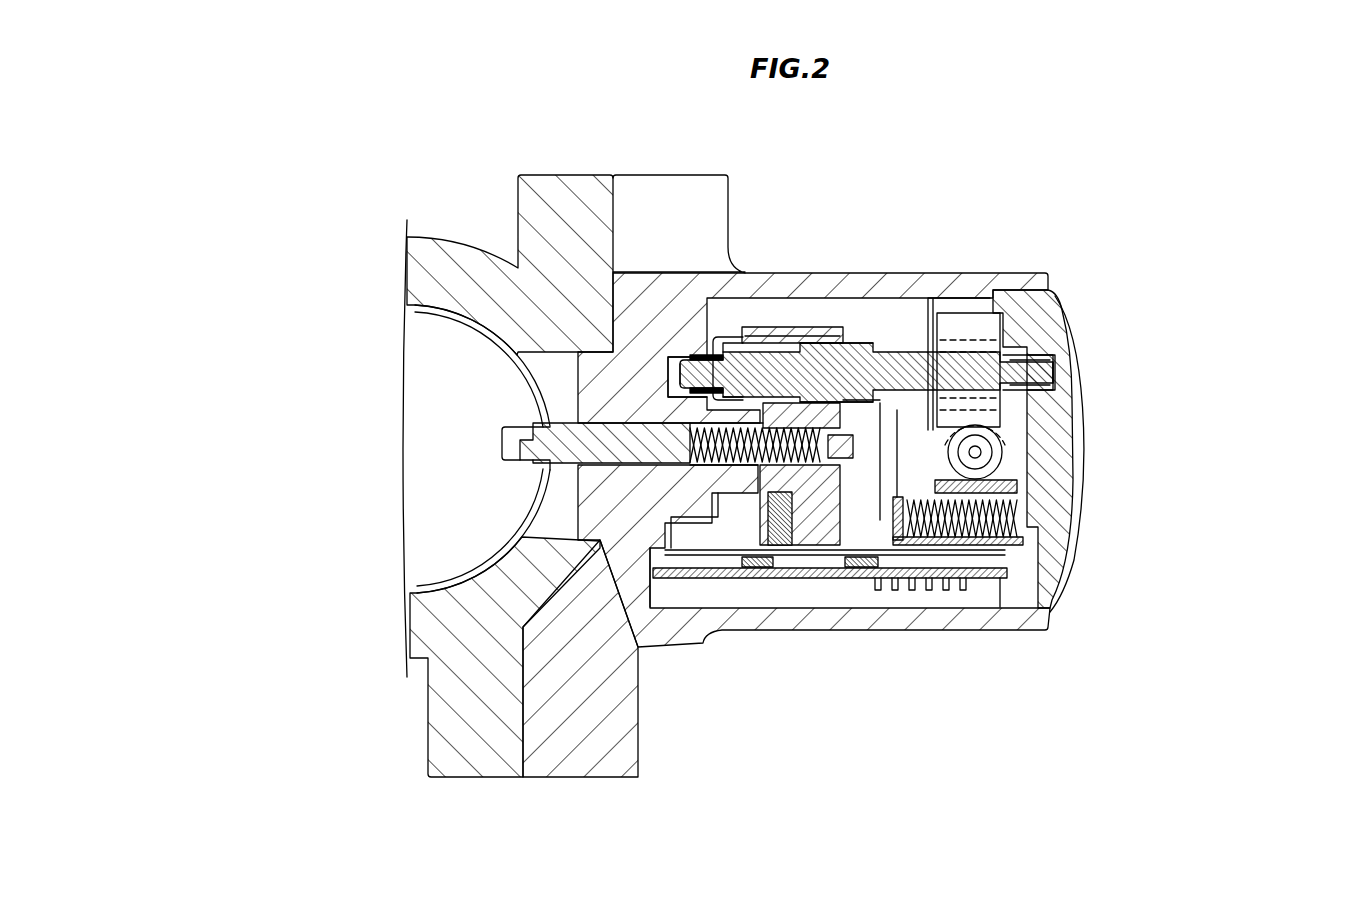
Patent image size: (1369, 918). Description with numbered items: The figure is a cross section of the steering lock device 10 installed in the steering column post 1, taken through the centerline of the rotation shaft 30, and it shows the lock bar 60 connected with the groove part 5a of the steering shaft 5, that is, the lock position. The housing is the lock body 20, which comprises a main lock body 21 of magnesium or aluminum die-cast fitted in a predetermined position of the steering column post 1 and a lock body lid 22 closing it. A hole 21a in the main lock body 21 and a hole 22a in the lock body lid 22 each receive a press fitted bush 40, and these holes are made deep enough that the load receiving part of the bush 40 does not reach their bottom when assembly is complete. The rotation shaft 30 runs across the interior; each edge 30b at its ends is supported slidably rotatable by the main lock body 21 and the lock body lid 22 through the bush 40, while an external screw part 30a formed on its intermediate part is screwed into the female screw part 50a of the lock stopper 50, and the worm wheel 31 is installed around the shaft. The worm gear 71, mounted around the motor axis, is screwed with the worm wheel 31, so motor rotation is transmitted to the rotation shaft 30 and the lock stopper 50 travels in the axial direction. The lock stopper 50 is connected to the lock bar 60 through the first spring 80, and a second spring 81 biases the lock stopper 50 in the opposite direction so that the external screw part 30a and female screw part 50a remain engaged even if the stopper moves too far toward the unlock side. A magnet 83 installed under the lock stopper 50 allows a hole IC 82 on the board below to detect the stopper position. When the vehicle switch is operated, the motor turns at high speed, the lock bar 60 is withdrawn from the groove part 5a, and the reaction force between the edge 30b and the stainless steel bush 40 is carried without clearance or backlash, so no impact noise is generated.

The steering column post 1 is at (540, 192).
The steering shaft 5 is at (366, 449).
The groove part 5a is at (512, 448).
The steering lock device 10 is at (1060, 182).
The lock body 20 is at (947, 273).
The main lock body 21 is at (726, 502).
The hole 21a is at (672, 378).
The lock body lid 22 is at (1149, 447).
The hole 22a is at (1047, 372).
The rotation shaft 30 is at (923, 274).
The external screw part 30a is at (853, 347).
The edge 30b is at (668, 362).
The worm wheel 31 is at (1012, 322).
The bush 40 is at (672, 398).
The lock stopper 50 is at (869, 434).
The female screw part 50a is at (790, 333).
The lock bar 60 is at (700, 465).
The worm gear 71 is at (1010, 450).
The first spring 80 is at (735, 464).
The second spring 81 is at (987, 540).
The hole IC 82 is at (755, 568).
The magnet 83 is at (785, 547).